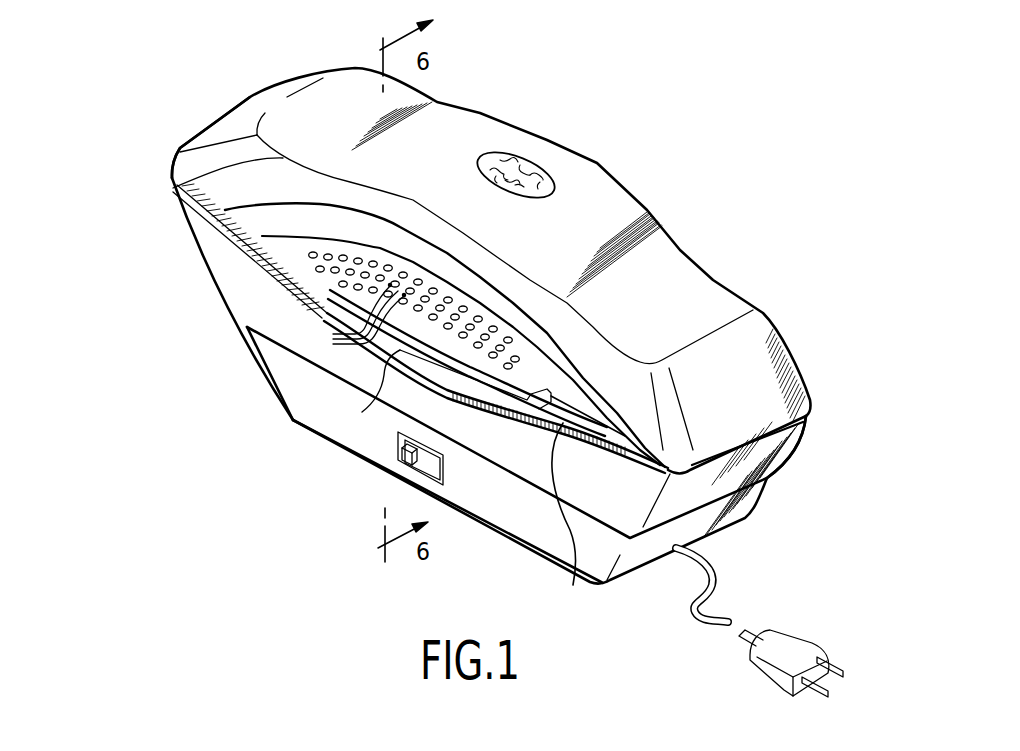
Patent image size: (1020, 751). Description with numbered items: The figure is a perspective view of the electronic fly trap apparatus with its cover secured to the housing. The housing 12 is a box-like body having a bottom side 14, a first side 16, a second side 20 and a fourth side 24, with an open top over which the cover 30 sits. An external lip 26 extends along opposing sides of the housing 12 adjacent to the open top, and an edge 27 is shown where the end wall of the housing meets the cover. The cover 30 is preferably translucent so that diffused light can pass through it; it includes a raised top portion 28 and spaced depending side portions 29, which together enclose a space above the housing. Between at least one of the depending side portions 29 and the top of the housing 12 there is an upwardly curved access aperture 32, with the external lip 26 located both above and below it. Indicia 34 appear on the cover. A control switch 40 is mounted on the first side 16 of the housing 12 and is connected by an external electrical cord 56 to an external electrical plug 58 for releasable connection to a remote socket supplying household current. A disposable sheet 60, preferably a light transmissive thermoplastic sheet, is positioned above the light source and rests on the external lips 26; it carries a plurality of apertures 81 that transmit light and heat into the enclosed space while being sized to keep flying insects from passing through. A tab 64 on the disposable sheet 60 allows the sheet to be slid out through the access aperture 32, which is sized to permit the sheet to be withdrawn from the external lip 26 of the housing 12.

The housing 12 is at (250, 364).
The bottom side 14 is at (541, 556).
The first side 16 is at (512, 528).
The second side 20 is at (276, 384).
The fourth side 24 is at (728, 515).
The external lip 26 is at (300, 224).
The end edge 27 is at (767, 487).
The raised top portion 28 is at (573, 178).
The depending side portions 29 is at (258, 106).
The cover 30 is at (663, 193).
The access aperture 32 is at (364, 284).
The indicia 34 is at (504, 157).
The control switch 40 is at (404, 458).
The external electrical cord 56 is at (690, 616).
The external electrical plug 58 is at (810, 638).
The disposable sheet 60 is at (568, 521).
The tab on disposable sheet 64 is at (368, 390).
The plurality of apertures 81 is at (334, 339).